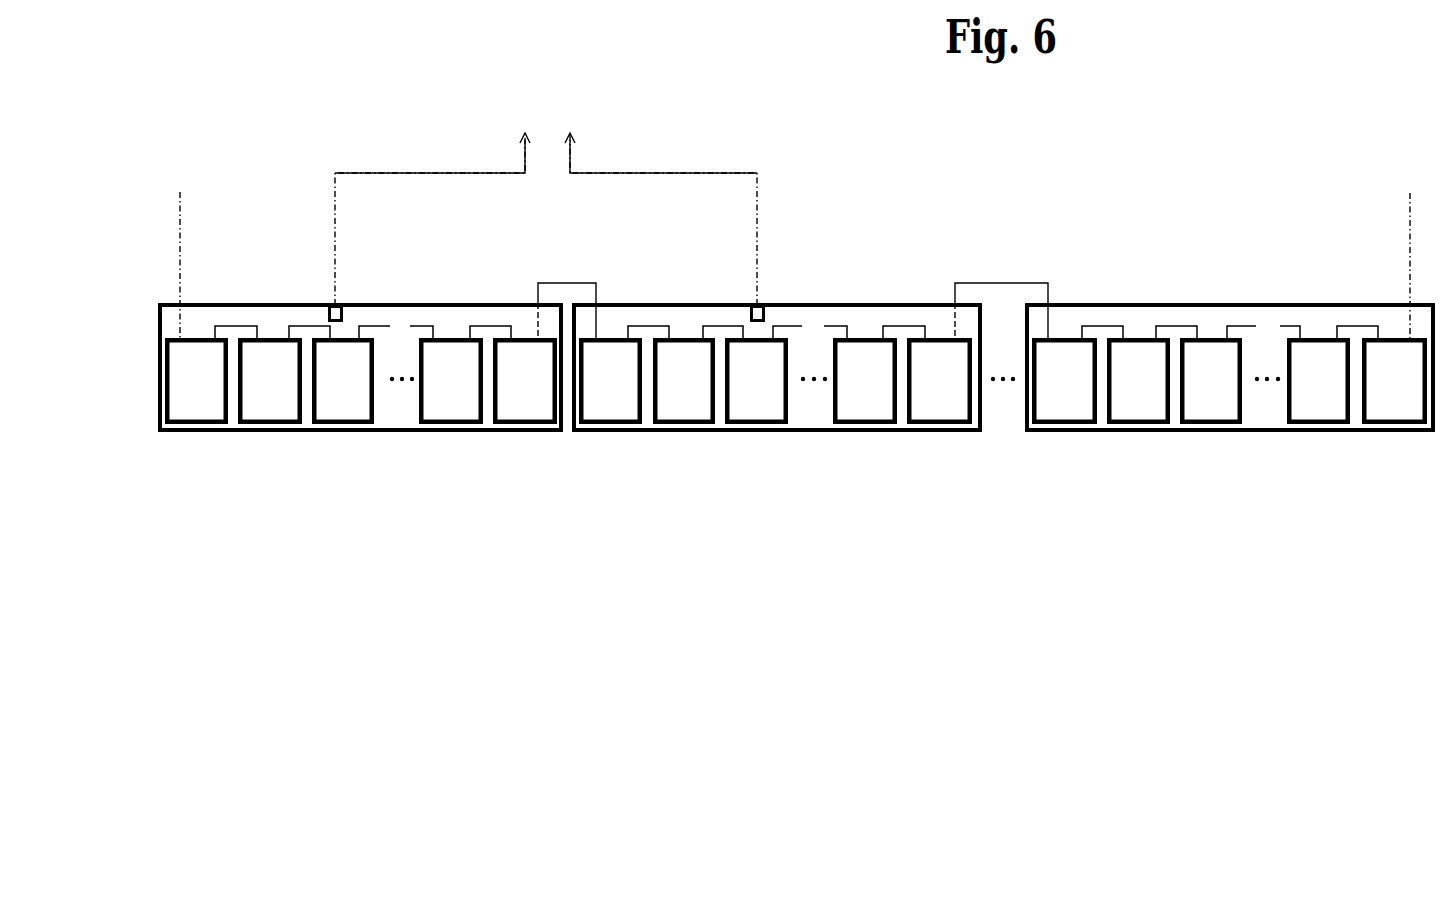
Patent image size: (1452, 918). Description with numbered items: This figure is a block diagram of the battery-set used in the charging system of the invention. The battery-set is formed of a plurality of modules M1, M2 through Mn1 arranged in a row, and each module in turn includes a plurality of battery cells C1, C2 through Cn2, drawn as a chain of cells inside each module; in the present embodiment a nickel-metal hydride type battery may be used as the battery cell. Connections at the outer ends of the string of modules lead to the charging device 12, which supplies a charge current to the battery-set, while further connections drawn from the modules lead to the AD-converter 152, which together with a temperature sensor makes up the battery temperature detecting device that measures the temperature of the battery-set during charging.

The module M1 is at (360, 374).
The module M2 is at (647, 303).
The module Mn1 is at (1092, 303).
The battery cell C1 is at (200, 434).
The battery cell C2 is at (277, 434).
The battery cell Cn2 is at (518, 434).
The charging device 12 is at (803, 233).
The AD-converter 152 is at (546, 198).